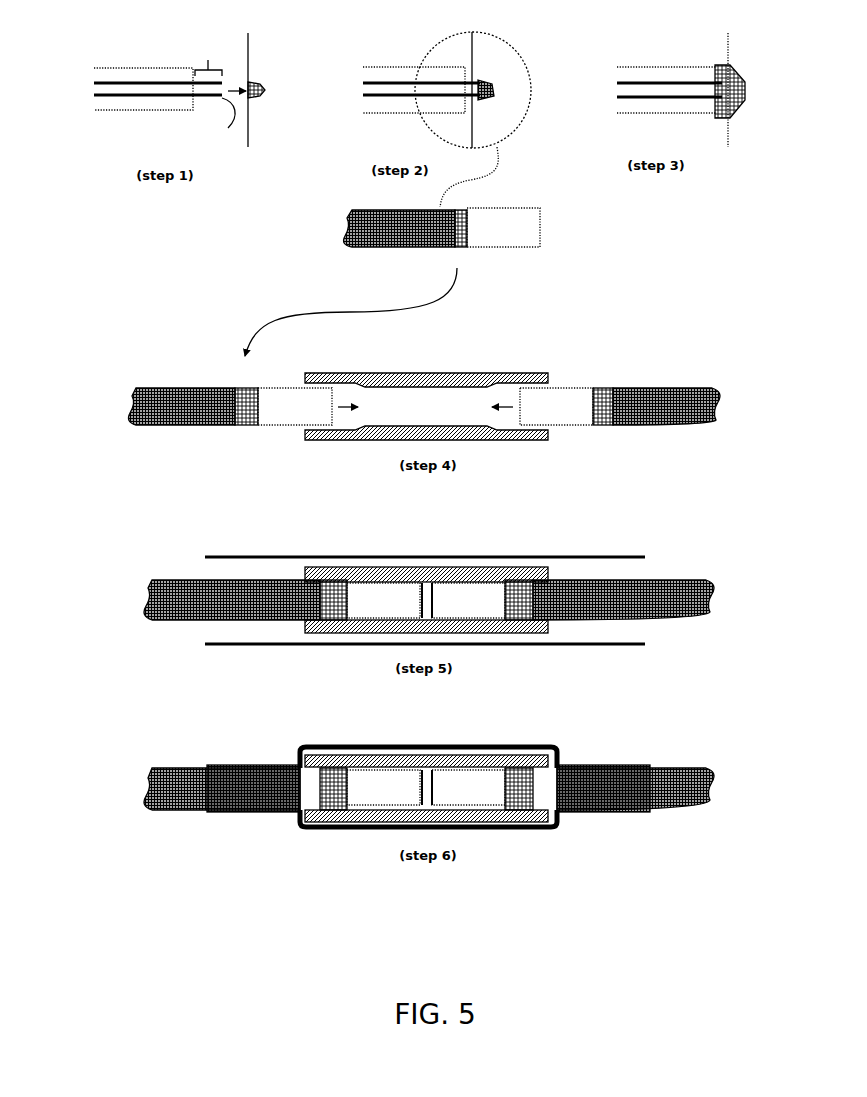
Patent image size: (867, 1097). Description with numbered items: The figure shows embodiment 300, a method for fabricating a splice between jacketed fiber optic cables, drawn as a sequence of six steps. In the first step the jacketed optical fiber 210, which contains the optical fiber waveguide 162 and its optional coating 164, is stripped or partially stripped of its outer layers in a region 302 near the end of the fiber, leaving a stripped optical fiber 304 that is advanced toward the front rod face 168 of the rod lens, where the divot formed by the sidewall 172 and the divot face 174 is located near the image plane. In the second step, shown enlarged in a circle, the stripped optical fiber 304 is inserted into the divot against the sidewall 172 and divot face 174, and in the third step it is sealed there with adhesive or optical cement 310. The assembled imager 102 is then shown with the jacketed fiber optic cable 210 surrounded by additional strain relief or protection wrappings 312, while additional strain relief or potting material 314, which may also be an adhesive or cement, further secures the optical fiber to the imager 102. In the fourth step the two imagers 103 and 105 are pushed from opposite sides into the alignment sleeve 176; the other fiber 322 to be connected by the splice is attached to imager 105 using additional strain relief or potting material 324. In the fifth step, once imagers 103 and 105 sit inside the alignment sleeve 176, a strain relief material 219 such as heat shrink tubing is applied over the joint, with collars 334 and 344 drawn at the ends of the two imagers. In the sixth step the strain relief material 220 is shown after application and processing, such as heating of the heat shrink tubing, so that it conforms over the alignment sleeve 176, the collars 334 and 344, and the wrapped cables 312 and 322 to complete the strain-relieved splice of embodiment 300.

The imager 102 is at (549, 241).
The imager 103 is at (339, 630).
The imager 105 is at (512, 628).
The optical fiber waveguide 162 is at (114, 71).
The coating 164 is at (123, 129).
The front rod face 168 is at (233, 121).
The sidewall 172 is at (530, 59).
The divot face 174 is at (547, 110).
The alignment sleeve 176 is at (426, 570).
The jacketed optical fiber 210 is at (142, 115).
The strain relief material 219 is at (425, 606).
The strain relief material 220 is at (455, 775).
The embodiment 300 is at (134, 784).
The region 302 is at (205, 57).
The stripped optical fiber 304 is at (481, 137).
The adhesive or optical cement 310 is at (708, 63).
The strain relief or protection wrappings 312 is at (283, 536).
The strain relief or potting material 314 is at (372, 348).
The other fiber 322 is at (659, 625).
The strain relief or potting material 324 is at (615, 436).
The first connector collar 334 is at (278, 726).
The second connector collar 344 is at (573, 725).